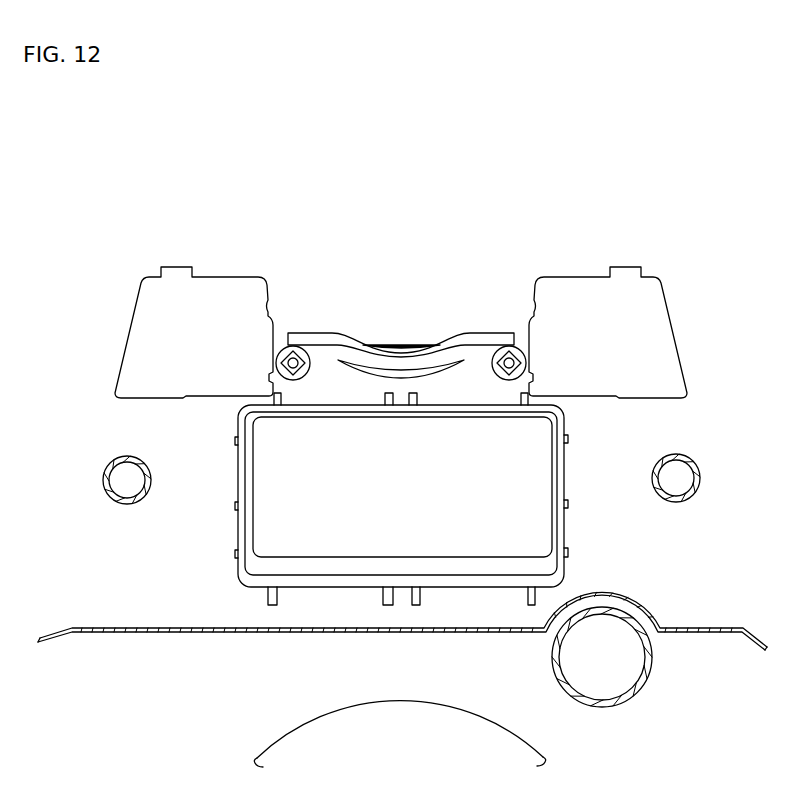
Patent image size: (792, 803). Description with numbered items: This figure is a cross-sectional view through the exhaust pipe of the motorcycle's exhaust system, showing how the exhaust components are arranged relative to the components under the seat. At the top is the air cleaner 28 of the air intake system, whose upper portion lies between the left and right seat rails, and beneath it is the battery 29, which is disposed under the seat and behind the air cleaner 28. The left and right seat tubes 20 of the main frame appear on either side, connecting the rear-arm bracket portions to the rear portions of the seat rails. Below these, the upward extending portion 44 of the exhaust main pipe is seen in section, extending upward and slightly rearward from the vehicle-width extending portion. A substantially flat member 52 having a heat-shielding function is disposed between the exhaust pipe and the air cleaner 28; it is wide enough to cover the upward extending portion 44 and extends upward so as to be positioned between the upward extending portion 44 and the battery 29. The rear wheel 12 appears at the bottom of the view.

The rear wheel 12 is at (537, 745).
The seat tube 20 is at (105, 468).
The air cleaner 28 is at (622, 262).
The battery 29 is at (565, 520).
The upward extending portion 44 is at (653, 667).
The substantially flat member 52 is at (703, 627).